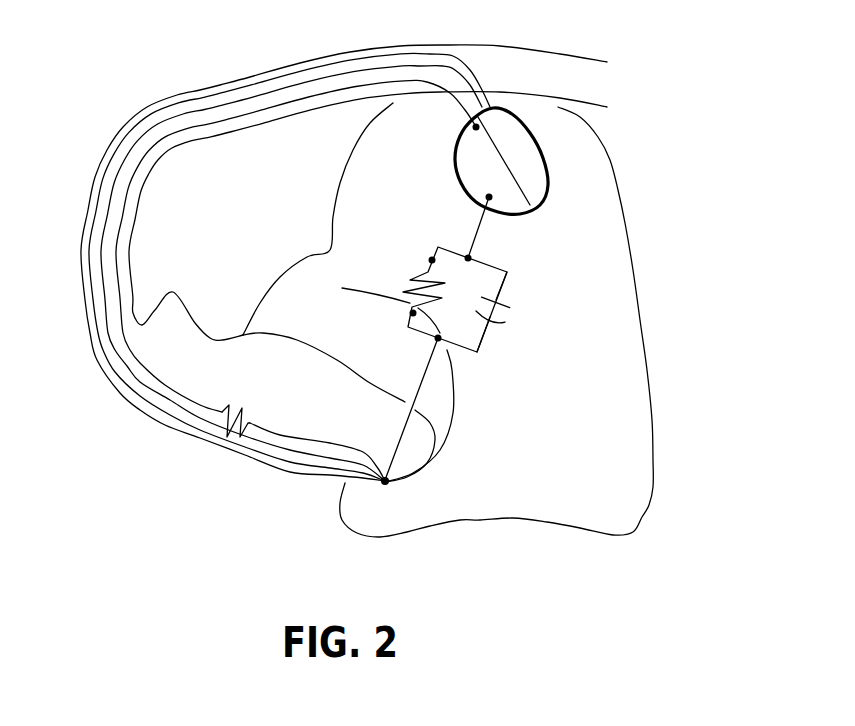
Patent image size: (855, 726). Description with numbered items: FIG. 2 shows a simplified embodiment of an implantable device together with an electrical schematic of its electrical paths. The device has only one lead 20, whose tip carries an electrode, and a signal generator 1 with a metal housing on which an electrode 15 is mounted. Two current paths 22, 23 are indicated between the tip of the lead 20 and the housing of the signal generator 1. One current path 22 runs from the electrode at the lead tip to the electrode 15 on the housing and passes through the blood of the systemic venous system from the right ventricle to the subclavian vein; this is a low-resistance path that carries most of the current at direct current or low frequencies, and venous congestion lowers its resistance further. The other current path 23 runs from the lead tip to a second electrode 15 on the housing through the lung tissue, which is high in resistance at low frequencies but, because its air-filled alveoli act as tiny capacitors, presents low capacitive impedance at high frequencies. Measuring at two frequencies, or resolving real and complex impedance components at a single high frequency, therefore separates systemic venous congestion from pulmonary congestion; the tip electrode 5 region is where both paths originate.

The signal generator 1 is at (489, 161).
The electrode 5 is at (387, 483).
The electrode 15 is at (473, 160).
The lead 20 is at (262, 448).
The current path 22 is at (295, 436).
The current path 23 is at (423, 380).